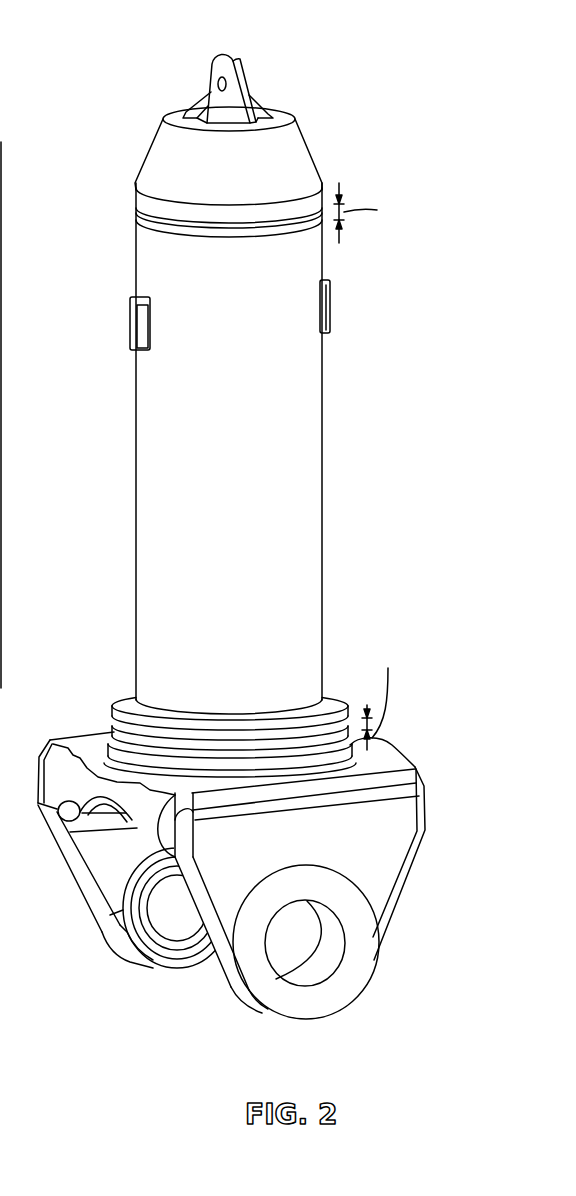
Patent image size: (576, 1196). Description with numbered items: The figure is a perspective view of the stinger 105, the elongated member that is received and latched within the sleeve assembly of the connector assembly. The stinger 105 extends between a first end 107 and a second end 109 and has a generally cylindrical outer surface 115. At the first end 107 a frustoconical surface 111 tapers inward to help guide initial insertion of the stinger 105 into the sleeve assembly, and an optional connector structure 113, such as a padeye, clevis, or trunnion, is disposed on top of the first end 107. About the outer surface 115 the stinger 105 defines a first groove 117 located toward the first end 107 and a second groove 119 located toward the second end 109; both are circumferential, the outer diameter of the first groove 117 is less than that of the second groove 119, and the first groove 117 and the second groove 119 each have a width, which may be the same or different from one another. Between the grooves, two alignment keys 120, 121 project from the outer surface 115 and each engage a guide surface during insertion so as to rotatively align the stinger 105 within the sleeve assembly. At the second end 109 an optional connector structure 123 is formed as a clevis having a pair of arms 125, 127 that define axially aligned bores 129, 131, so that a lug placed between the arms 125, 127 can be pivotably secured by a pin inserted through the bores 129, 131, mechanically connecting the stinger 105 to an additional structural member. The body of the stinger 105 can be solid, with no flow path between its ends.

The stinger 105 is at (362, 42).
The first end 107 is at (282, 116).
The second end 109 is at (421, 784).
The frustoconical surface 111 is at (310, 147).
The connector structure 113 is at (236, 58).
The outer surface 115 is at (298, 417).
The first groove 117 is at (122, 211).
The second groove 119 is at (98, 723).
The alignment key 120 is at (131, 323).
The alignment key 121 is at (331, 296).
The connector structure 123 is at (395, 762).
The arm 125 is at (388, 853).
The arm 127 is at (80, 877).
The bore 129 is at (286, 953).
The bore 131 is at (172, 912).